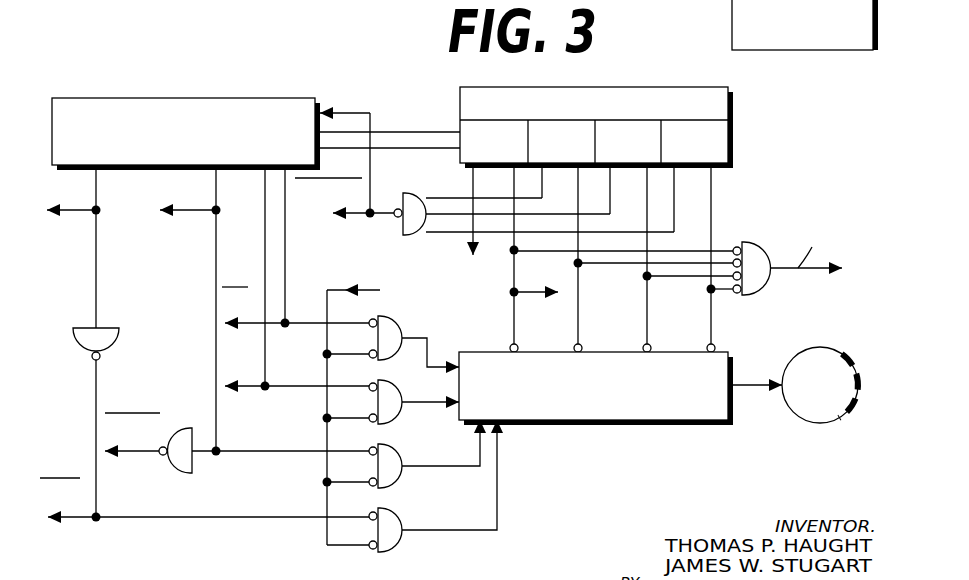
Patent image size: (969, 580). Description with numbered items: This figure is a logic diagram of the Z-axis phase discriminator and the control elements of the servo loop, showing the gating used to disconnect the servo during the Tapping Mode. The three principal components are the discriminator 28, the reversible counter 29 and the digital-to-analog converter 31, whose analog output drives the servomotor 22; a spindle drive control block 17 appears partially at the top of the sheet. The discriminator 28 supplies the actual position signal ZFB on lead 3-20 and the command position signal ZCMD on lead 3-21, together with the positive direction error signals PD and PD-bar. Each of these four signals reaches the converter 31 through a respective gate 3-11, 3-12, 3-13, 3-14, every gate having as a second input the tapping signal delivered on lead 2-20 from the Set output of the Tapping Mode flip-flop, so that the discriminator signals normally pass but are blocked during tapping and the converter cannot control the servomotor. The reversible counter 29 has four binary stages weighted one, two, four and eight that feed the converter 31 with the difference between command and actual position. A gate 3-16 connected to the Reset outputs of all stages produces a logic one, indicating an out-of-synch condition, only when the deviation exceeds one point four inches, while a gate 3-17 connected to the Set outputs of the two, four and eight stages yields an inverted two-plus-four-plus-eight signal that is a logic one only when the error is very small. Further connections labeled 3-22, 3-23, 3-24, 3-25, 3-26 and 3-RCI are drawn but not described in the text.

The spindle drive control 17 is at (732, 14).
The discriminator 28 is at (262, 98).
The reversible counter 29 is at (460, 105).
The digital-to-analog converter 31 is at (563, 425).
The servomotor 22 is at (848, 344).
The gate 3-17 is at (403, 196).
The 2+4+8 output line 3-26 is at (356, 215).
The reversible counter input line 3-RCI is at (468, 248).
The gate 3-16 is at (766, 290).
The lead 2-20 is at (333, 290).
The gate 3-14 is at (392, 318).
The gate 3-13 is at (392, 423).
The gate 3-12 is at (392, 487).
The gate 3-11 is at (392, 551).
The lead 3-20 is at (96, 282).
The ZCMD signal line 3-22 is at (216, 285).
The PD-bar signal line 3-25 is at (270, 325).
The PD signal line 3-24 is at (247, 388).
The inverter 3-23 is at (140, 453).
The lead 3-21 is at (80, 519).